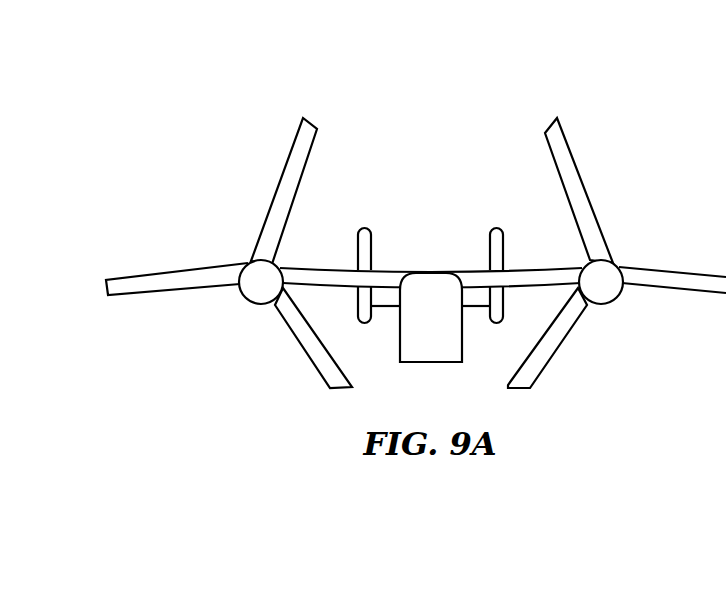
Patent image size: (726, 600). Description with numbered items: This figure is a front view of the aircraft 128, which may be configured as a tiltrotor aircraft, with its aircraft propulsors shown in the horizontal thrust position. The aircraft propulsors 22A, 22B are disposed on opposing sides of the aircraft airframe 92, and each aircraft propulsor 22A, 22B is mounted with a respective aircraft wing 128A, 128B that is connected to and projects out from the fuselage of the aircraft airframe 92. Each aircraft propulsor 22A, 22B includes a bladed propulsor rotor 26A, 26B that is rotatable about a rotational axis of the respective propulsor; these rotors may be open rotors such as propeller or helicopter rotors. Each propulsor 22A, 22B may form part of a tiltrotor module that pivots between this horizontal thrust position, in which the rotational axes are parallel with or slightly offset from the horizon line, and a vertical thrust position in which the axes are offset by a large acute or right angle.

The aircraft 128 is at (358, 158).
The aircraft propulsor 22A is at (232, 235).
The aircraft propulsor 22B is at (632, 233).
The bladed propulsor rotor 26A is at (310, 113).
The bladed propulsor rotor 26B is at (552, 113).
The aircraft airframe 92 is at (425, 260).
The aircraft wing 128A is at (320, 267).
The aircraft wing 128B is at (540, 264).